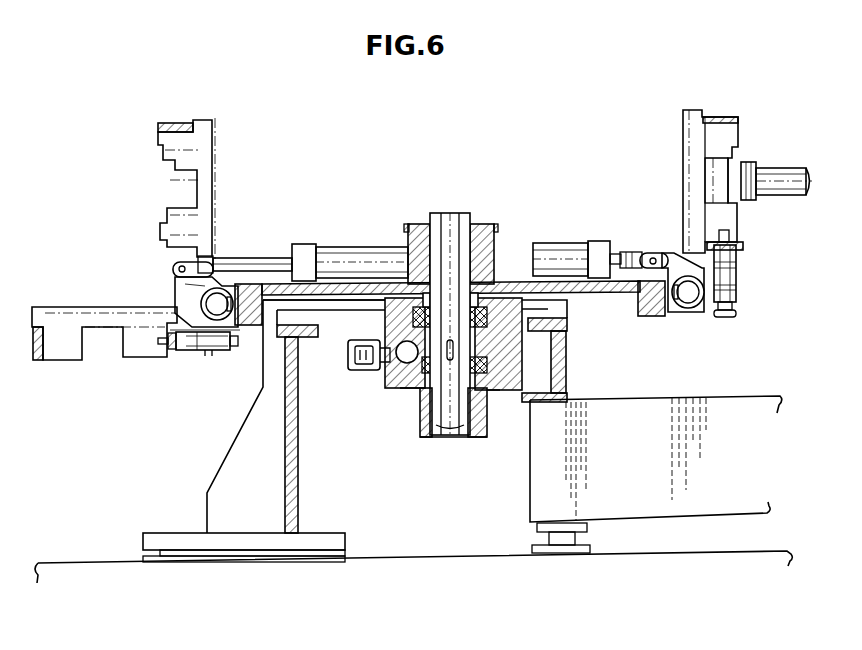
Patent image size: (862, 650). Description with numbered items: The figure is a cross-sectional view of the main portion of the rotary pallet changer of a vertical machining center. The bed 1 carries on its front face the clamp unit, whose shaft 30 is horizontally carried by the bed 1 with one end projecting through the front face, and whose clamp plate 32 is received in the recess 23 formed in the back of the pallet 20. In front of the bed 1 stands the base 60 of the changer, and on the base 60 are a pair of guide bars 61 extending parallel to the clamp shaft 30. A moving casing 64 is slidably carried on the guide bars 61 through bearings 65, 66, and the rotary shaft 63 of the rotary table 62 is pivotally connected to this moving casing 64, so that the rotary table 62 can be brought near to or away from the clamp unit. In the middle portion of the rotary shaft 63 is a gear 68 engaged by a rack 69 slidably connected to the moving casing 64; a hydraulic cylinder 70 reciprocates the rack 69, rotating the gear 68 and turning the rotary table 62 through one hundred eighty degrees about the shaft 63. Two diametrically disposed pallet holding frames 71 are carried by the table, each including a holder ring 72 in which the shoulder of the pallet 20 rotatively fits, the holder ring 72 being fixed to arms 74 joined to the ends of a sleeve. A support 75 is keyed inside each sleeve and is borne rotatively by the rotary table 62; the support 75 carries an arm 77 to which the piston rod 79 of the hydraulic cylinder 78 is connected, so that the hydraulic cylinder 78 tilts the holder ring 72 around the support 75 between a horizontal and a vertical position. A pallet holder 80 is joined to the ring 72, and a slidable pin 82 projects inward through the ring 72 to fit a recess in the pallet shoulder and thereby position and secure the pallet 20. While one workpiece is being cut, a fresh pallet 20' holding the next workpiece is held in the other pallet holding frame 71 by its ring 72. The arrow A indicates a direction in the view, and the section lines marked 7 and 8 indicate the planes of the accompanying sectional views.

The bed 1 is at (747, 398).
The second linear guide 7 is at (272, 302).
The bearing 8 is at (318, 356).
The pallet 20 is at (686, 151).
The fresh pallet 20' is at (157, 224).
The recess 23 is at (713, 171).
The shaft 30 is at (793, 188).
The clamp plate 32 is at (749, 197).
The base 60 is at (288, 479).
The guide bars 61 is at (350, 308).
The rotary table 62 is at (523, 283).
The rotary shaft 63 is at (447, 240).
The moving casing 64 is at (408, 250).
The bearing 65 is at (440, 306).
The bearing 66 is at (420, 405).
The gear 68 is at (497, 392).
The rack 69 is at (394, 378).
The hydraulic cylinder 70 is at (352, 371).
The pallet holding frame 71 is at (735, 111).
The holder ring 72 is at (715, 117).
The arms 74 is at (214, 356).
The support 75 is at (217, 300).
The arm 77 is at (185, 286).
The hydraulic cylinder 78 is at (325, 258).
The piston rod 79 is at (278, 259).
The pallet holder 80 is at (205, 351).
The slidable pin 82 is at (168, 341).
The direction arrow A is at (631, 212).